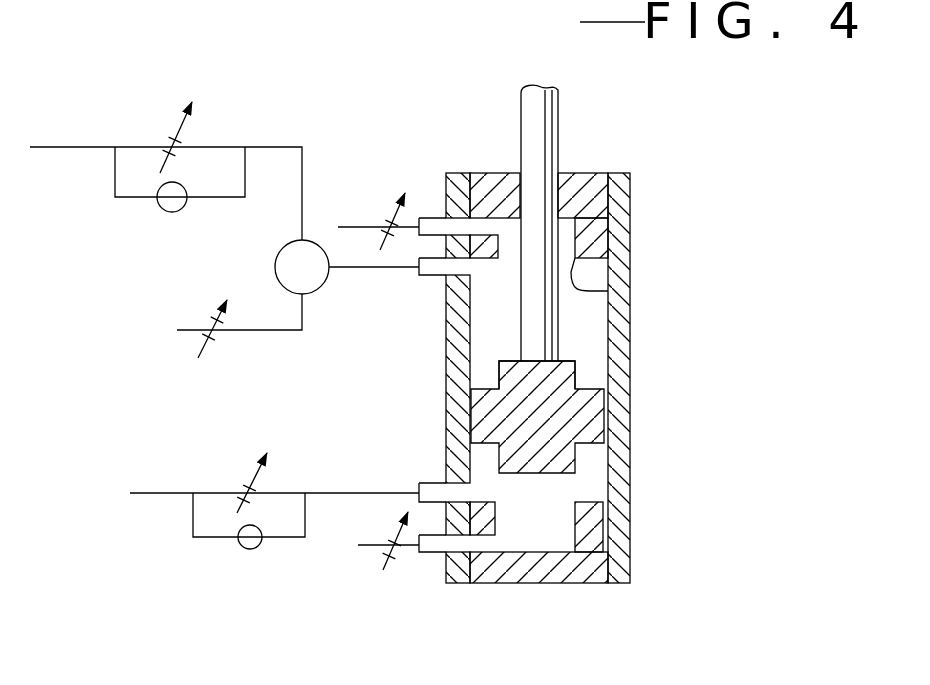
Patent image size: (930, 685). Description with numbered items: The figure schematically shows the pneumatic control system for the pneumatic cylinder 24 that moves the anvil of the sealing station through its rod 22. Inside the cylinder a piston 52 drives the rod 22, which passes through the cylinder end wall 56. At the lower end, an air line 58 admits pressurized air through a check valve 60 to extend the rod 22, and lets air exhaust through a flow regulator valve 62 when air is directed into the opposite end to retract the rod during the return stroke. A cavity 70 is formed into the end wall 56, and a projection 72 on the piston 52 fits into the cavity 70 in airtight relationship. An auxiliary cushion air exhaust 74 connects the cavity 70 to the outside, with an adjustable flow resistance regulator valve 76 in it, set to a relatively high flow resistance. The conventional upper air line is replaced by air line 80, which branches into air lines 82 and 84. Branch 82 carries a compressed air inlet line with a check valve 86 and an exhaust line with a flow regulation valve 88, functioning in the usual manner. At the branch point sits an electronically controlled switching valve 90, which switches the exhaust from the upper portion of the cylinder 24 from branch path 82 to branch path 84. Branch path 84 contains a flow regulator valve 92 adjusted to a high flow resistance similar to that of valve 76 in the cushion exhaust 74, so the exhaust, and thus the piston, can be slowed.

The rod 22 is at (558, 115).
The pneumatic cylinder 24 is at (575, 604).
The piston 52 is at (600, 410).
The cylinder end wall 56 is at (587, 173).
The air line 58 is at (338, 493).
The check valve 60 is at (245, 550).
The flow regulator valve 62 is at (258, 470).
The cavity 70 is at (617, 290).
The projection 72 is at (573, 374).
The auxiliary (cushion) air exhaust 74 is at (363, 195).
The adjustable flow resistance regulator valve 76 is at (395, 195).
The air line 80 is at (367, 268).
The air line 82 is at (302, 160).
The air line 84 is at (273, 330).
The check valve 86 is at (172, 173).
The flow regulation valve 88 is at (185, 138).
The electronically controlled switching valve 90 is at (273, 263).
The flow regulator valve 92 is at (200, 335).